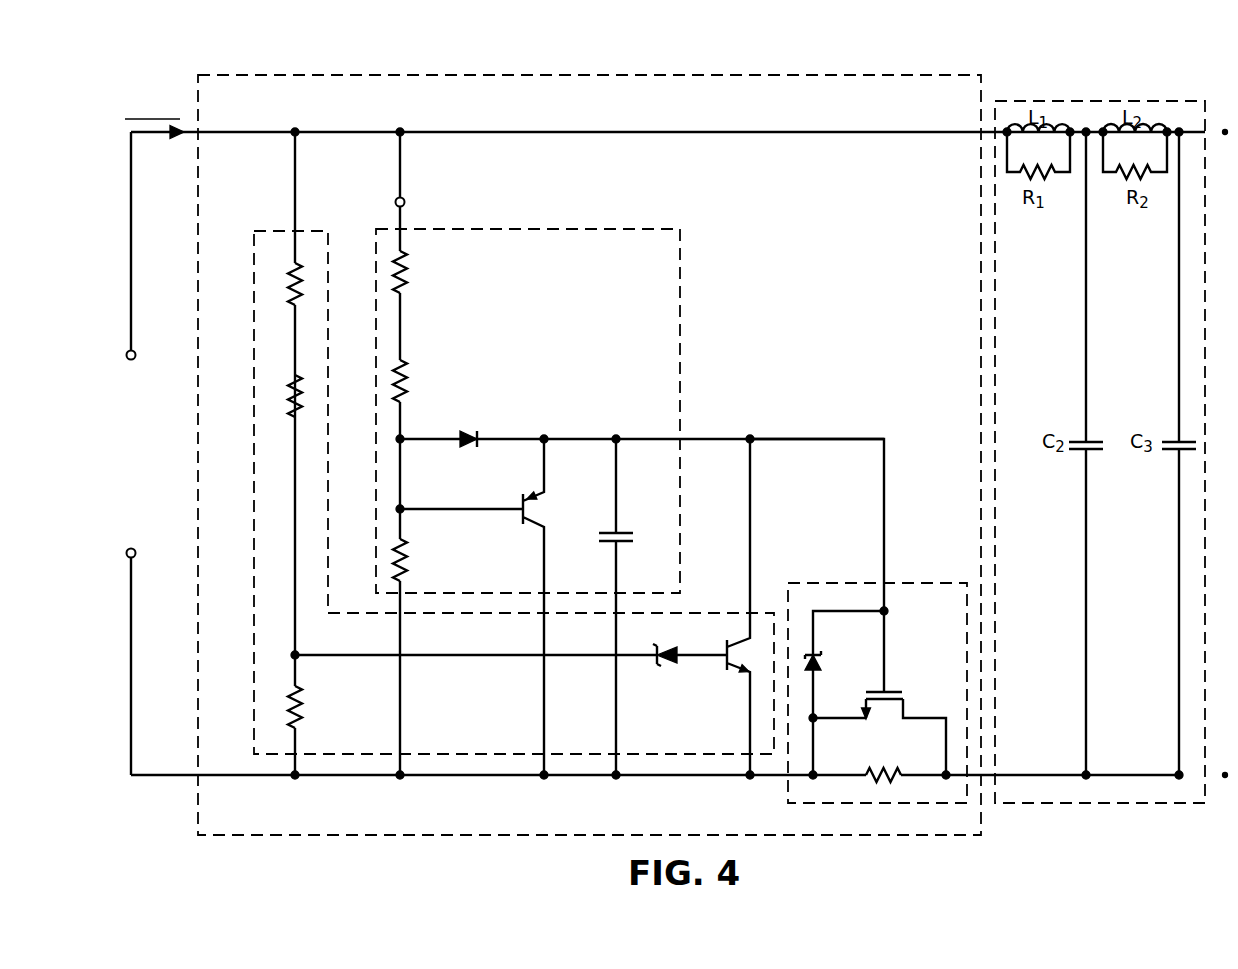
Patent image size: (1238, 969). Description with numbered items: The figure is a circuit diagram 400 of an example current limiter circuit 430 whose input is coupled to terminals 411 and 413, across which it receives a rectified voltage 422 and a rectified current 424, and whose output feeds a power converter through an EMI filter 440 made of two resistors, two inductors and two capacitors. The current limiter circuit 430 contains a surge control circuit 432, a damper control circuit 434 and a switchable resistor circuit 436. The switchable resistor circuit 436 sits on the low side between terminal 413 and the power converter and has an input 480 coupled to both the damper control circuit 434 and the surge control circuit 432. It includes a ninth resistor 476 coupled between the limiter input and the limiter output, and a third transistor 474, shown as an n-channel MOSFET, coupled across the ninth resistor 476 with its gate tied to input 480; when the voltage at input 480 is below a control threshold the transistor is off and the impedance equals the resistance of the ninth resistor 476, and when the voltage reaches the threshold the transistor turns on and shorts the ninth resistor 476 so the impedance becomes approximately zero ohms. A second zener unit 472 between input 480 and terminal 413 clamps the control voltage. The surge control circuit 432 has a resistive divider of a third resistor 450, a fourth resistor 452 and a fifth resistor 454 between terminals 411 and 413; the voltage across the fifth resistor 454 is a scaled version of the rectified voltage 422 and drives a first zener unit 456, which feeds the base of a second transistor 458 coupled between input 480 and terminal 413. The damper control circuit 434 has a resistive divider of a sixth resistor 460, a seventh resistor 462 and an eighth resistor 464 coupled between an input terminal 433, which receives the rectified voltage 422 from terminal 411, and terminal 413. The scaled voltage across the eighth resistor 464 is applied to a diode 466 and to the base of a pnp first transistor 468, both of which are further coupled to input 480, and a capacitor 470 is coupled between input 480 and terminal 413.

The circuit diagram 400 is at (695, 47).
The terminal 411 is at (135, 358).
The terminal 413 is at (135, 556).
The rectified voltage VRECT 422 is at (131, 463).
The rectified current IRECT 424 is at (160, 96).
The current limiter circuit 430 is at (762, 75).
The surge control circuit 432 is at (252, 229).
The input terminal 433 is at (405, 200).
The damper control circuit 434 is at (585, 228).
The switchable resistor circuit 436 is at (816, 582).
The EMI filter 440 is at (1064, 101).
The resistor R3 450 is at (306, 276).
The resistor R4 452 is at (306, 398).
The resistor R5 454 is at (305, 710).
The zener unit VR1 456 is at (663, 664).
The transistor Q2 458 is at (733, 680).
The resistor R6 460 is at (437, 278).
The resistor R7 462 is at (437, 387).
The resistor R8 464 is at (437, 563).
The diode D1 466 is at (479, 426).
The transistor Q1 468 is at (530, 526).
The capacitor C1 470 is at (624, 528).
The zener unit VR2 472 is at (820, 659).
The transistor Q3 474 is at (890, 686).
The resistor R9 476 is at (860, 762).
The input 480 is at (798, 437).